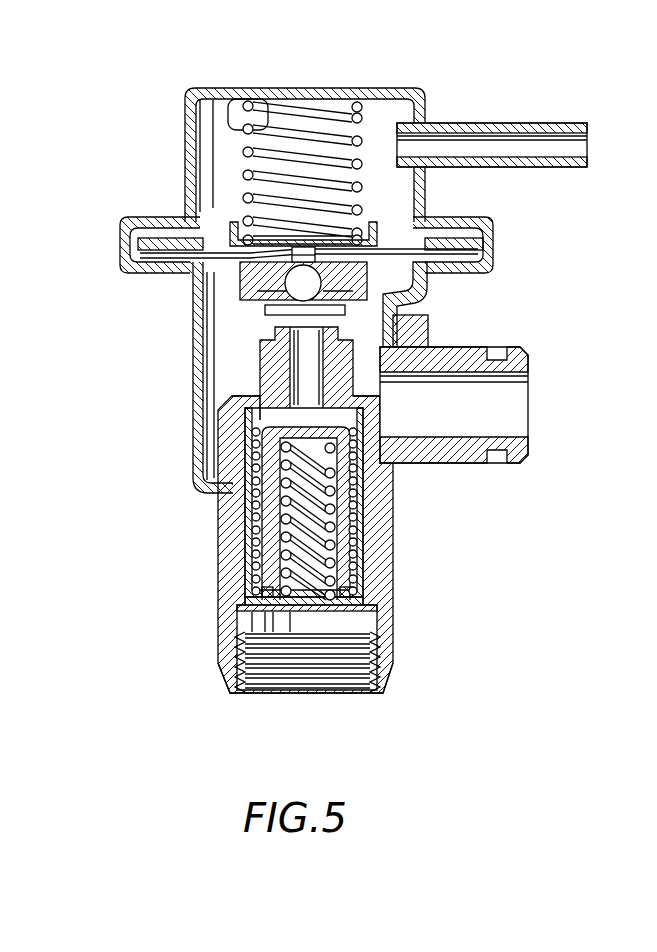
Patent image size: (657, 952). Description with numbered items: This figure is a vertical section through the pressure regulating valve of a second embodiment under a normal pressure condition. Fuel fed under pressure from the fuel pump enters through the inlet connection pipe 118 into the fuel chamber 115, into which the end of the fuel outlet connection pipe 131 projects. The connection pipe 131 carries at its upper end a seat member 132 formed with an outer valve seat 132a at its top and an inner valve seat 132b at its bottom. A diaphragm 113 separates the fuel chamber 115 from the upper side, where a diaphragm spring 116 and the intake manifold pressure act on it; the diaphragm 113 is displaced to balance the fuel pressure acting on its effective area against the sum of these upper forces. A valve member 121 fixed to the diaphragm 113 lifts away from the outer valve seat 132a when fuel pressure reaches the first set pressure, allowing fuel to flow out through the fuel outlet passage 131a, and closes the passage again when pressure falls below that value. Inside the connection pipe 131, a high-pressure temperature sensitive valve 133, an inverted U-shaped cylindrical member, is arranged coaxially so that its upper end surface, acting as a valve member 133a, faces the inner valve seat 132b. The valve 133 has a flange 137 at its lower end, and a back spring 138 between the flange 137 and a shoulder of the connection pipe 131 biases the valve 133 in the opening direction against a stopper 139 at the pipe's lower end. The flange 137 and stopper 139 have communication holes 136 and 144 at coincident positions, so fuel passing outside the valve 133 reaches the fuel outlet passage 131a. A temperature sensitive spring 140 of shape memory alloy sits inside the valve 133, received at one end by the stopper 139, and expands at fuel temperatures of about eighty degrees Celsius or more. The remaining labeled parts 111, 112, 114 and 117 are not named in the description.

The cover housing 111 is at (188, 126).
The lower housing body 112 is at (193, 402).
The diaphragm 113 is at (190, 281).
The cover liner 114 is at (213, 176).
The fuel chamber 115 is at (223, 362).
The diaphragm spring 116 is at (243, 138).
The connecting tube 117 is at (485, 124).
The inlet connection pipe 118 is at (513, 347).
The valve member 121 is at (345, 312).
The fuel outlet connection pipe 131 is at (397, 650).
The fuel outlet passage 131a is at (350, 633).
The seat member 132 is at (396, 333).
The outer valve seat 132a is at (257, 324).
The inner valve seat 132b is at (245, 420).
The high-pressure temperature sensitive valve 133 is at (243, 510).
The valve member 133a is at (356, 420).
The communication hole 136 is at (243, 588).
The flange 137 is at (360, 597).
The back spring 138 is at (358, 530).
The stopper 139 is at (362, 608).
The temperature sensitive spring 140 is at (247, 552).
The communication hole 144 is at (243, 618).